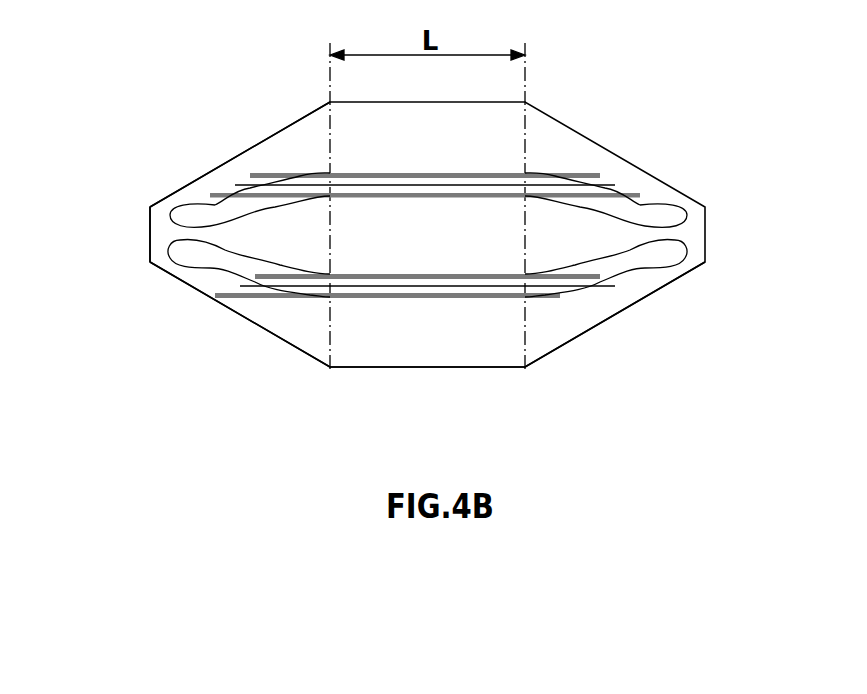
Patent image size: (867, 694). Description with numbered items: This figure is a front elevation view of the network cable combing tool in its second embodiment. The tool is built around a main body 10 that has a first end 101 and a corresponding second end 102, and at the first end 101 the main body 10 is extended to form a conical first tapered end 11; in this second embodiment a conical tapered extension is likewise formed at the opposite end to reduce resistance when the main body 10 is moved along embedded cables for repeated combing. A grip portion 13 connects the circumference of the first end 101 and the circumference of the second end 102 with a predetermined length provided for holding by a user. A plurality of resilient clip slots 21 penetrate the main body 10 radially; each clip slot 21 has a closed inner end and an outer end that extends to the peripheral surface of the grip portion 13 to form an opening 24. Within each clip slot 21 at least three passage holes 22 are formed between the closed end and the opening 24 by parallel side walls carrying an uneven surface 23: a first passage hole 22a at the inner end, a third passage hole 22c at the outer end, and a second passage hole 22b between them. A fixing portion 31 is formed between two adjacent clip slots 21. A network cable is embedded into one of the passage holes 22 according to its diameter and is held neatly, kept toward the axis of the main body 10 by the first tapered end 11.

The main body 10 is at (640, 140).
The first tapered end 11 is at (163, 211).
The grip portion 13 is at (480, 241).
The clip slots 21 is at (215, 210).
The passage holes 22 is at (411, 315).
The first passage hole 22a is at (193, 265).
The second passage hole 22b is at (243, 273).
The third passage hole 22c is at (270, 320).
The uneven surface 23 is at (238, 187).
The opening 24 is at (388, 282).
The fixing portion 31 is at (323, 122).
The first end 101 is at (330, 342).
The second end 102 is at (530, 367).